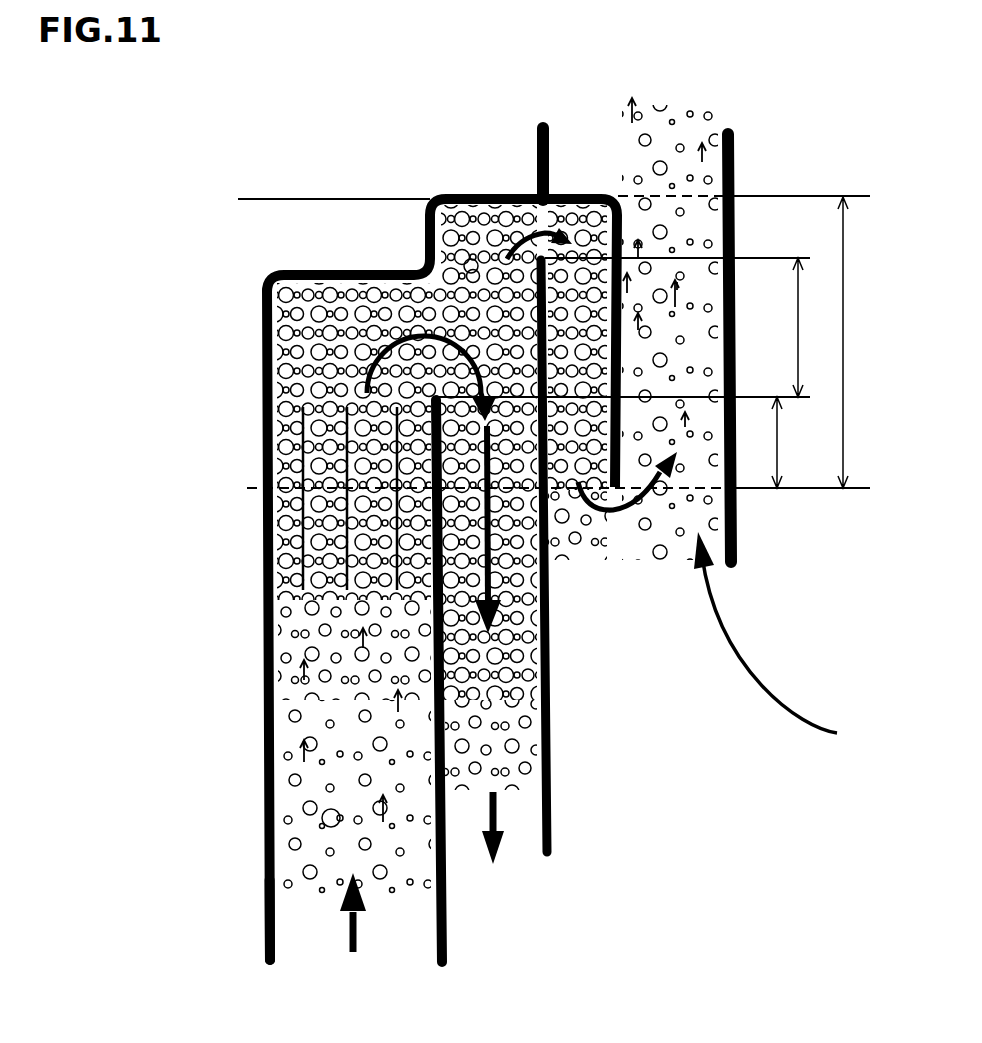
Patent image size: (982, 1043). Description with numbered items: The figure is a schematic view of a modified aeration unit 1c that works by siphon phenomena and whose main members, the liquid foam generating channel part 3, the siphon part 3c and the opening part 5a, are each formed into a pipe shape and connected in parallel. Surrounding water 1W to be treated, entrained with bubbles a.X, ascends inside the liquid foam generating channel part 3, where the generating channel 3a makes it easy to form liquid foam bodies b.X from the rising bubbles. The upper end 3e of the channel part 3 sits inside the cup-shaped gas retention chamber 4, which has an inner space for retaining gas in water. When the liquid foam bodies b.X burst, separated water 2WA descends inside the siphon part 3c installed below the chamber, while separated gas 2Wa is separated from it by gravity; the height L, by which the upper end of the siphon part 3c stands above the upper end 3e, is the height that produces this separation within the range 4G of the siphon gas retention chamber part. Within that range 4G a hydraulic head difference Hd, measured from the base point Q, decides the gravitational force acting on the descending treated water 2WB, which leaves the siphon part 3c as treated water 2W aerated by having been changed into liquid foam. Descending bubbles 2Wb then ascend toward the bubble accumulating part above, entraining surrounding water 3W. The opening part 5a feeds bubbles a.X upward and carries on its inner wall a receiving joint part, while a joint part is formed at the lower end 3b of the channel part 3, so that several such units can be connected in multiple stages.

The aeration unit 1c is at (212, 177).
The liquid foam generating channel part 3 is at (267, 715).
The generating channel 3a is at (340, 480).
The lower end of the liquid foam generating channel part 3b is at (270, 935).
The siphon part 3c is at (548, 816).
The upper end of the liquid foam generating channel part 3e is at (367, 387).
The gas retention chamber 4 is at (262, 290).
The opening part 5a is at (548, 165).
The separated water 2WA is at (397, 337).
The descending treated water 2WB is at (493, 548).
The separated gas 2Wa is at (525, 250).
The descending bubbles 2Wb is at (637, 512).
The liquid foam bodies b.X is at (470, 265).
The bubbles a.X is at (322, 815).
The base point Q is at (617, 490).
The height L is at (795, 327).
The range of the siphon gas retention chamber part 4G is at (840, 342).
The hydraulic head difference Hd is at (774, 442).
The surrounding water 1W is at (353, 939).
The treated water 2W is at (488, 849).
The surrounding water 3W is at (765, 651).